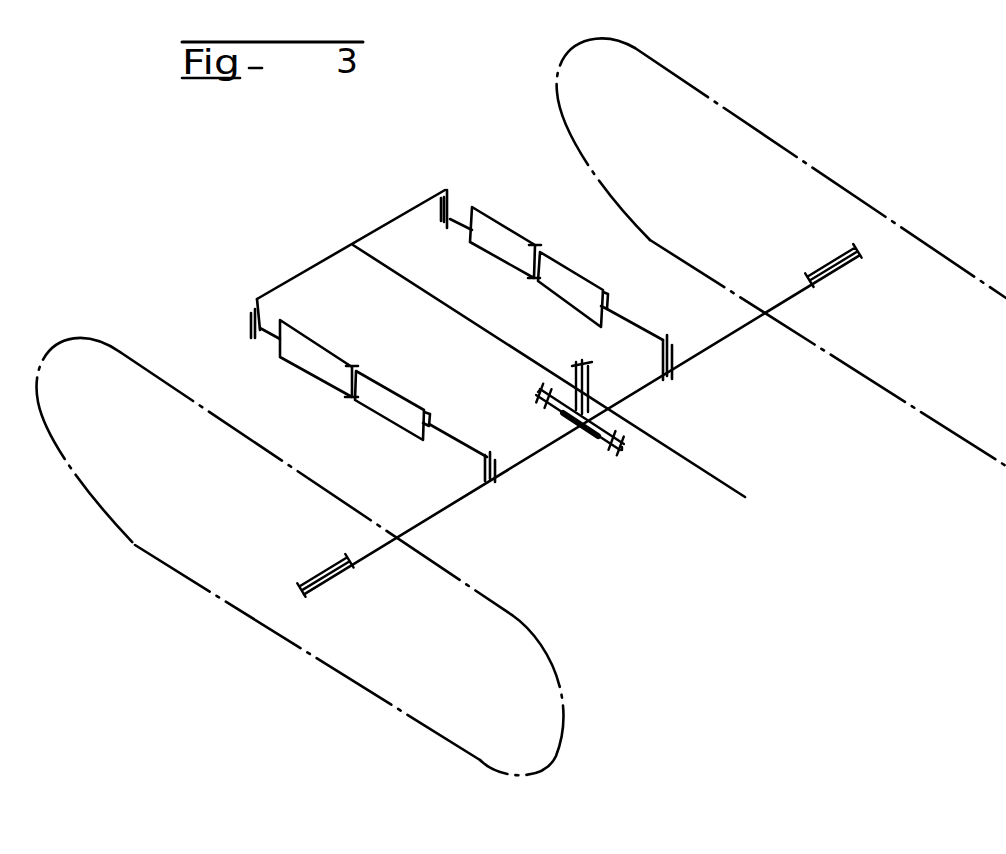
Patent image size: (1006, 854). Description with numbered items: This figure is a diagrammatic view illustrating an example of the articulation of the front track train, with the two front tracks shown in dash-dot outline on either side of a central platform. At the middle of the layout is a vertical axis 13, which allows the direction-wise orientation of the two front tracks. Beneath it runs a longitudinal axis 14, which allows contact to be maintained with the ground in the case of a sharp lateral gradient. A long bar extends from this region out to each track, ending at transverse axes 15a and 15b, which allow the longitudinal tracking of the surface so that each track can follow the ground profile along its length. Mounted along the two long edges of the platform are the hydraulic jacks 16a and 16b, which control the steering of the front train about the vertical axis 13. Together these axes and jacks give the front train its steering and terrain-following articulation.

The vertical axis 13 is at (590, 381).
The longitudinal axis 14 is at (582, 440).
The transverse axis 15a is at (843, 283).
The transverse axis 15b is at (342, 585).
The hydraulic jack 16a is at (555, 196).
The hydraulic jack 16b is at (393, 382).